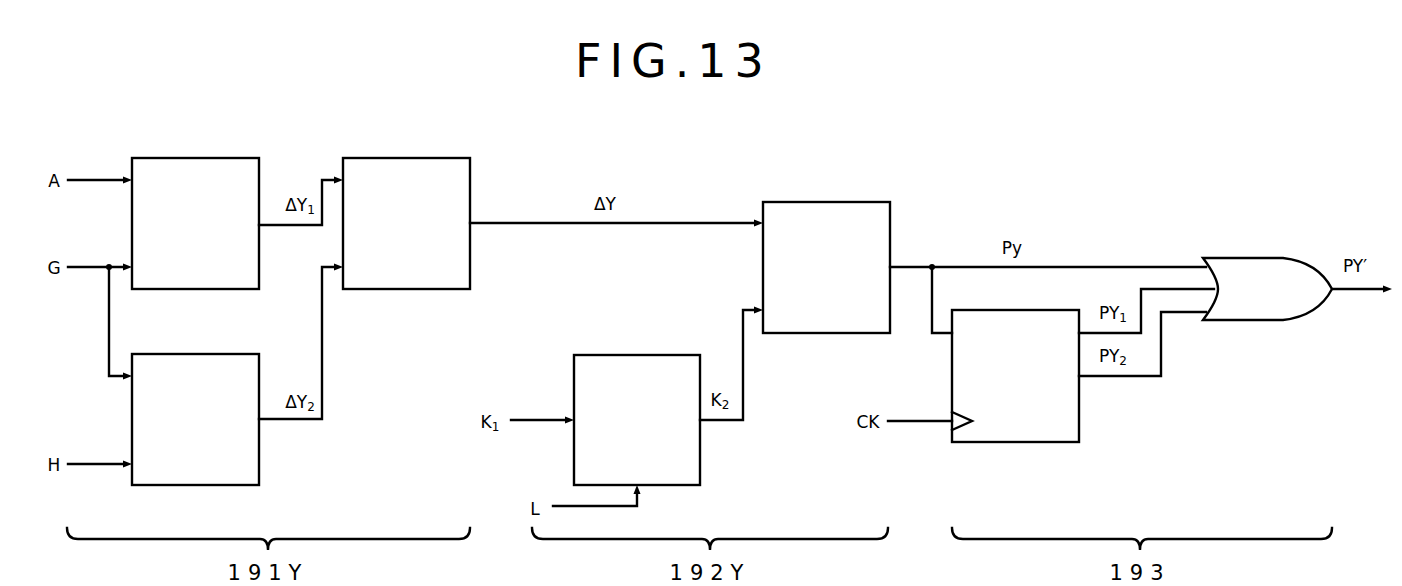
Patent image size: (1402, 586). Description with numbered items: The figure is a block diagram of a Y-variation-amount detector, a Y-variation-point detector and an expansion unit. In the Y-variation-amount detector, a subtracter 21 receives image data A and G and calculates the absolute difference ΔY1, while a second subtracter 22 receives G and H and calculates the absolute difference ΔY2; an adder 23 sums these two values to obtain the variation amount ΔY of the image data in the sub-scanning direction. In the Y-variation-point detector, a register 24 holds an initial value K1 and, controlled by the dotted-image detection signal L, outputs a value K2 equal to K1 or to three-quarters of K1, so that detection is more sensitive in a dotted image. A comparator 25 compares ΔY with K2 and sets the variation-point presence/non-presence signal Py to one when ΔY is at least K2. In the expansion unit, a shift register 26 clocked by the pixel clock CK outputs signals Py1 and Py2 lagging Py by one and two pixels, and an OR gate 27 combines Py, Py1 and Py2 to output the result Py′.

The subtracter 21 is at (217, 158).
The subtracter 22 is at (217, 355).
The adder 23 is at (427, 158).
The register 24 is at (657, 355).
The comparator 25 is at (847, 202).
The shift register 26 is at (1014, 310).
The OR gate 27 is at (1269, 258).